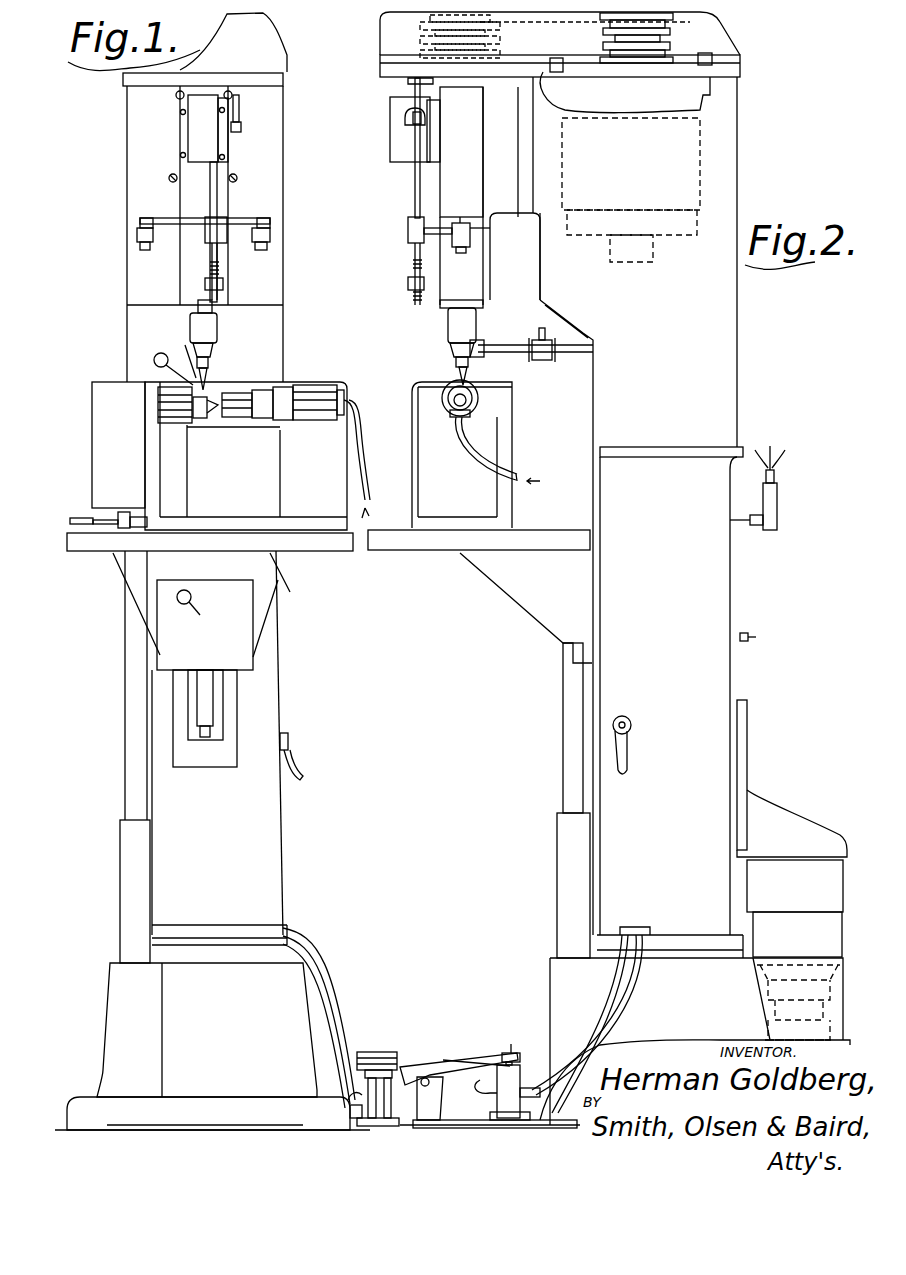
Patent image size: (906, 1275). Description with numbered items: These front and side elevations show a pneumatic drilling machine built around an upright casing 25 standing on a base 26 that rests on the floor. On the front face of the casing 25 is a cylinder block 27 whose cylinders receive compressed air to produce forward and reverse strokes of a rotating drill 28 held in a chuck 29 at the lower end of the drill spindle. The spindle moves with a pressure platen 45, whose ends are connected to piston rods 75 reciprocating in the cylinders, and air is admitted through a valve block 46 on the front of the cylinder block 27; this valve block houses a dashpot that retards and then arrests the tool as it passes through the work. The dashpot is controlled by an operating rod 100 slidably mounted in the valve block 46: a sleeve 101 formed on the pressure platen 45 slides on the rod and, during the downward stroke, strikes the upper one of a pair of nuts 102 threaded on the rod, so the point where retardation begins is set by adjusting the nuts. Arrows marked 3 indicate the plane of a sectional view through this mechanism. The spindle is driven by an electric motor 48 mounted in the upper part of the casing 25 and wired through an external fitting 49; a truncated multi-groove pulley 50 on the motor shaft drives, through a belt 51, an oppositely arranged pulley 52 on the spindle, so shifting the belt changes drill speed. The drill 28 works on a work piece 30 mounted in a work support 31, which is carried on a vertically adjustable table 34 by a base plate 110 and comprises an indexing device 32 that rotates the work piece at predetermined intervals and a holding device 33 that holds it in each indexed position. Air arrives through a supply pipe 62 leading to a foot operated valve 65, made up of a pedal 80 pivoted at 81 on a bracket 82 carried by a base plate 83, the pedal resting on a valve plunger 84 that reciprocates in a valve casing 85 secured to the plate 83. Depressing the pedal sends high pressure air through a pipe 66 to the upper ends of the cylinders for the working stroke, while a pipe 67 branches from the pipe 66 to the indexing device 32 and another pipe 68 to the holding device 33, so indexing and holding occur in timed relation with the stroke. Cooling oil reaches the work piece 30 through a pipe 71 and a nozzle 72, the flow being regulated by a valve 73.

In FIG. 2, the section line 3- 3 is at (404, 82).
In FIG. 1, the upright casing 25 is at (265, 836).
In FIG. 2, the upright casing 25 is at (718, 678).
In FIG. 1, the base 26 is at (241, 1047).
In FIG. 2, the base 26 is at (696, 1024).
In FIG. 2, the cylinder block 27 is at (476, 152).
In FIG. 1, the rotating drill 28 is at (207, 375).
In FIG. 2, the rotating drill 28 is at (460, 368).
In FIG. 1, the rotating chuck 29 is at (212, 331).
In FIG. 2, the rotating chuck 29 is at (455, 322).
In FIG. 1, the work piece 30 is at (205, 420).
In FIG. 1, the work support 31 is at (250, 495).
In FIG. 2, the work support 31 is at (475, 502).
In FIG. 1, the indexing device 32 is at (105, 392).
In FIG. 1, the holding device 33 is at (318, 453).
In FIG. 1, the table 34 is at (93, 552).
In FIG. 2, the table 34 is at (430, 552).
In FIG. 1, the pressure platen 45 is at (222, 241).
In FIG. 2, the pressure platen 45 is at (455, 247).
In FIG. 1, the valve block 46 is at (196, 128).
In FIG. 2, the valve block 46 is at (395, 122).
In FIG. 2, the electric motor 48 is at (690, 180).
In FIG. 2, the external fitting 49 is at (775, 495).
In FIG. 2, the pulley 50 is at (650, 52).
In FIG. 2, the belt 51 is at (586, 80).
In FIG. 2, the pulley 52 is at (430, 25).
In FIG. 1, the supply pipe 62 is at (332, 998).
In FIG. 2, the supply pipe 62 is at (600, 995).
In FIG. 1, the foot operated valve 65 is at (381, 1042).
In FIG. 2, the foot operated valve 65 is at (492, 1044).
In FIG. 1, the pipe 66 is at (340, 1009).
In FIG. 2, the pipe 66 is at (614, 1012).
In FIG. 1, the pipe 67 is at (74, 517).
In FIG. 1, the pipe 68 is at (360, 478).
In FIG. 2, the pipe 68 is at (480, 470).
In FIG. 2, the pipe 71 is at (577, 353).
In FIG. 1, the nozzle 72 is at (175, 354).
In FIG. 2, the valve 73 is at (542, 362).
In FIG. 1, the piston rods 75 is at (140, 223).
In FIG. 2, the piston rods 75 is at (480, 222).
In FIG. 1, the pedal 80 is at (390, 1055).
In FIG. 2, the pedal 80 is at (457, 1060).
In FIG. 2, the pivot 81 is at (430, 1082).
In FIG. 1, the bracket 82 is at (380, 1126).
In FIG. 2, the bracket 82 is at (432, 1112).
In FIG. 1, the base plate 83 is at (357, 1127).
In FIG. 2, the base plate 83 is at (460, 1128).
In FIG. 2, the valve plunger 84 is at (509, 1054).
In FIG. 2, the valve casing 85 is at (505, 1075).
In FIG. 1, the operating rod 100 is at (217, 200).
In FIG. 2, the operating rod 100 is at (415, 187).
In FIG. 1, the sleeve 101 is at (207, 237).
In FIG. 2, the sleeve 101 is at (408, 229).
In FIG. 1, the nuts 102 is at (223, 284).
In FIG. 2, the nuts 102 is at (408, 284).
In FIG. 1, the base plate 110 is at (220, 540).
In FIG. 2, the base plate 110 is at (470, 530).